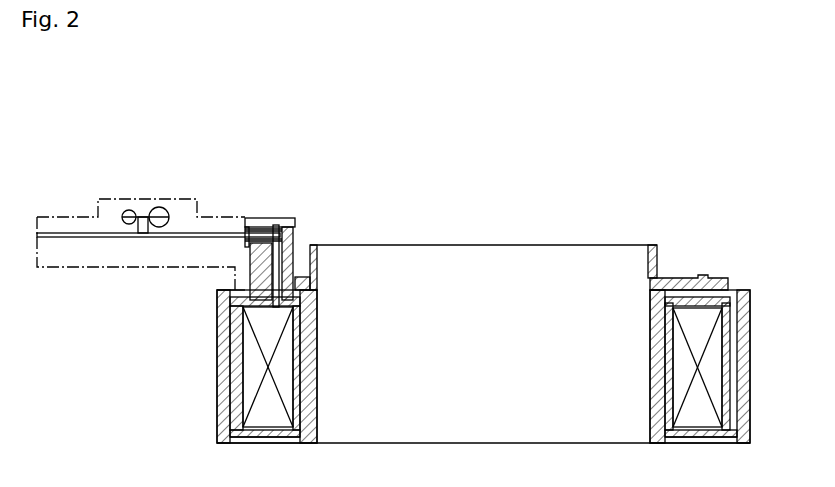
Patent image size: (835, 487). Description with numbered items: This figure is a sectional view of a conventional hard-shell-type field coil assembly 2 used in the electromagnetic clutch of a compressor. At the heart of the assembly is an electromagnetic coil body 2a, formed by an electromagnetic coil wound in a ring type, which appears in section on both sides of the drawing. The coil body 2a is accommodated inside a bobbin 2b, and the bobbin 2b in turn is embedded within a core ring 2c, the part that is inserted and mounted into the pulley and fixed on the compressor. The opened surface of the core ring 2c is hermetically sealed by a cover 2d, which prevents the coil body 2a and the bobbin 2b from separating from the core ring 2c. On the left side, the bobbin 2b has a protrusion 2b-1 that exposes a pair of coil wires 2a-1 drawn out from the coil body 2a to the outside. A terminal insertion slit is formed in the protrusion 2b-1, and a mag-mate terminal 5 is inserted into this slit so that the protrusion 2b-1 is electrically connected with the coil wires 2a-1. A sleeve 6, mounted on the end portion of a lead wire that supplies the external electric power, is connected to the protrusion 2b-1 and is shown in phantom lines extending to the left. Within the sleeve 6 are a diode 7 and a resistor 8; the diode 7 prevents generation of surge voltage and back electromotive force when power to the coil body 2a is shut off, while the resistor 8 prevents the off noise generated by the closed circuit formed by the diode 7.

The field coil assembly 2 is at (445, 160).
The electromagnetic coil body 2a is at (703, 410).
The coil wires 2a-1 is at (292, 245).
The bobbin 2b is at (728, 322).
The protrusion 2b-1 is at (295, 260).
The core ring 2c is at (745, 365).
The cover 2d is at (728, 440).
The mag-mate terminal 5 is at (265, 220).
The sleeve 6 is at (118, 262).
The diode 7 is at (129, 210).
The resistor 8 is at (159, 207).